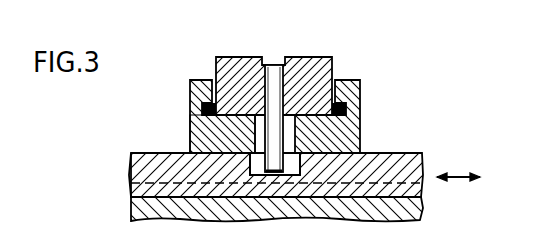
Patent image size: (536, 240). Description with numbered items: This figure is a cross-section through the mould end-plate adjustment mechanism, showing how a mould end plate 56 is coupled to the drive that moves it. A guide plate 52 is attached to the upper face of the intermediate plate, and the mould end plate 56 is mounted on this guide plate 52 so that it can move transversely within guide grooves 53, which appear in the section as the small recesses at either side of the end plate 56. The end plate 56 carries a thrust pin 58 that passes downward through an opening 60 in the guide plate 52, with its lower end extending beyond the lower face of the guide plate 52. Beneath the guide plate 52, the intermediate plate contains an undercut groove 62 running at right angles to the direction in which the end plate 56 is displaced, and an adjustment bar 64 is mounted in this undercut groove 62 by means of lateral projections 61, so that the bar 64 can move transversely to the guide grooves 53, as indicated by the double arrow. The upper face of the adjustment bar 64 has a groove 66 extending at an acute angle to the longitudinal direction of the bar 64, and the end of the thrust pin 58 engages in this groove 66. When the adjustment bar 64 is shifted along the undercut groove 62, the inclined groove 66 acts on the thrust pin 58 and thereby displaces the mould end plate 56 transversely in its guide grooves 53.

The guide plate 52 is at (350, 132).
The guide groove 53 is at (192, 105).
The mould end plate 56 is at (240, 72).
The thrust pin 58 is at (282, 84).
The opening 60 is at (197, 125).
The lateral projection 61 is at (402, 170).
The undercut groove 62 is at (420, 215).
The adjustment bar 64 is at (135, 168).
The groove 66 is at (245, 167).